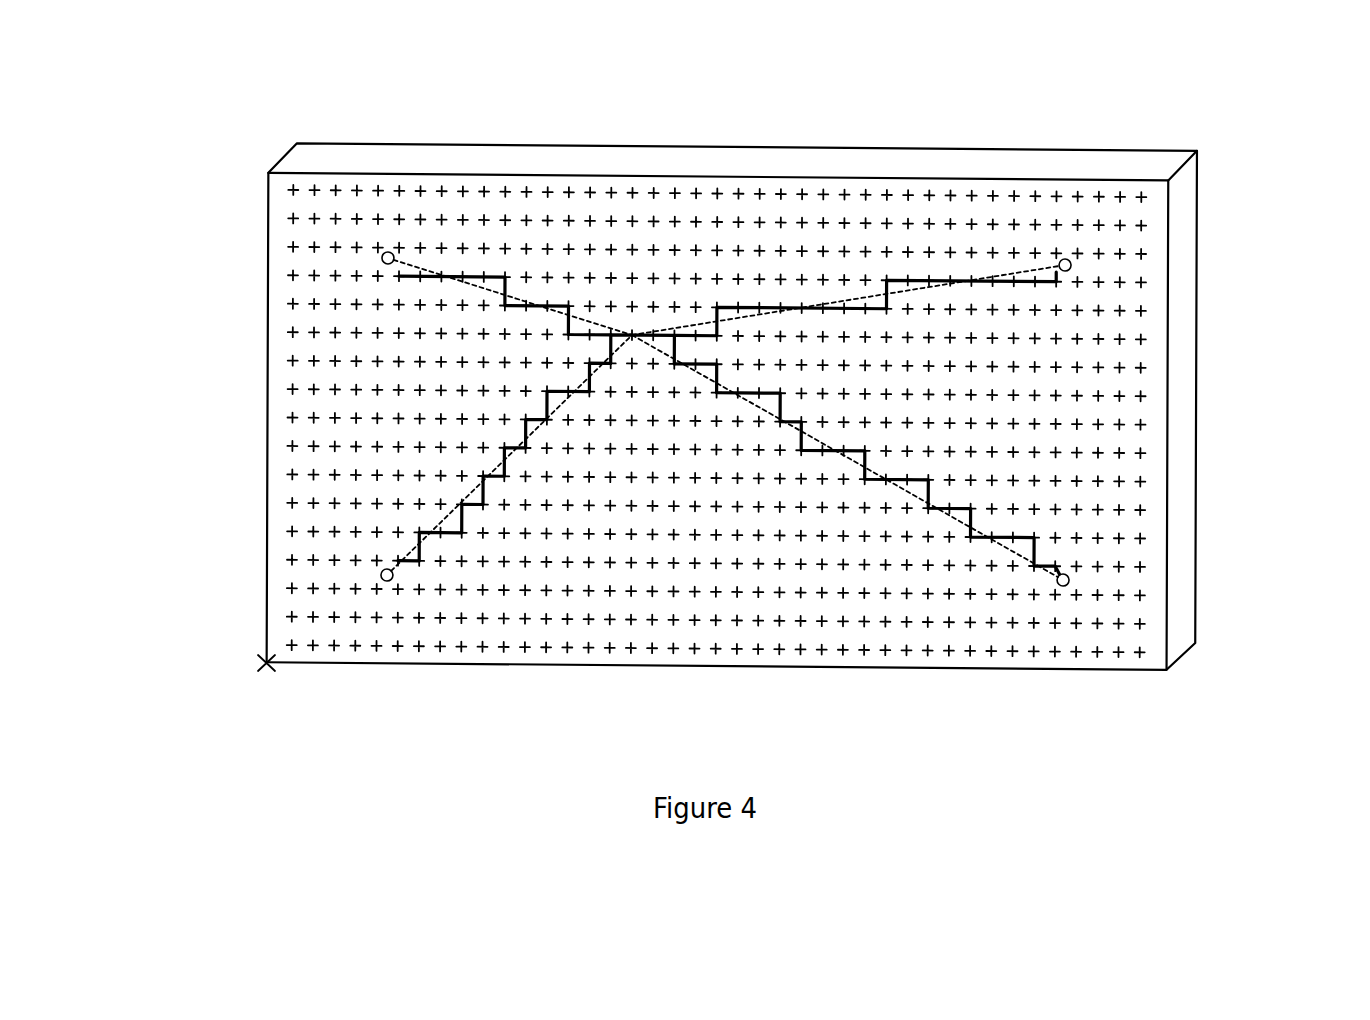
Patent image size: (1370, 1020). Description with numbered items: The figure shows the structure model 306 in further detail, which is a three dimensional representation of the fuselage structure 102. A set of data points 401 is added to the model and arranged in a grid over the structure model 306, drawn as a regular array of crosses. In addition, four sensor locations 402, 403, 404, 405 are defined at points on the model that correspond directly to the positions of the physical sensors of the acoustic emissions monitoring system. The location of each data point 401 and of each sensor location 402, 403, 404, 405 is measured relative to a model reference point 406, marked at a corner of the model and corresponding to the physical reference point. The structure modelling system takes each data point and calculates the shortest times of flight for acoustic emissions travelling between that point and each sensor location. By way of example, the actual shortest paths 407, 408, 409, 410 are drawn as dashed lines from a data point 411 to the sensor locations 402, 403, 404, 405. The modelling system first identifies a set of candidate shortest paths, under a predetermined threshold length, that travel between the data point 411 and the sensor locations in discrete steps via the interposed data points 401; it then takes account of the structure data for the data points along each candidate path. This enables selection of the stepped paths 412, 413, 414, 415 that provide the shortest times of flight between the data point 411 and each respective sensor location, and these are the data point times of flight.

The fuselage structure 102 is at (721, 146).
The structure model 306 is at (1140, 118).
The data points 401 is at (673, 620).
The sensor location 402 is at (382, 258).
The sensor location 403 is at (1071, 263).
The sensor location 404 is at (1069, 579).
The sensor location 405 is at (381, 575).
The model reference point 406 is at (265, 663).
The actual shortest path 407 is at (472, 283).
The actual shortest path 408 is at (903, 292).
The actual shortest path 409 is at (953, 517).
The actual shortest path 410 is at (445, 519).
The data point 411 is at (633, 332).
The selected path 412 is at (505, 272).
The selected path 413 is at (887, 280).
The selected path 414 is at (865, 478).
The selected path 415 is at (462, 532).